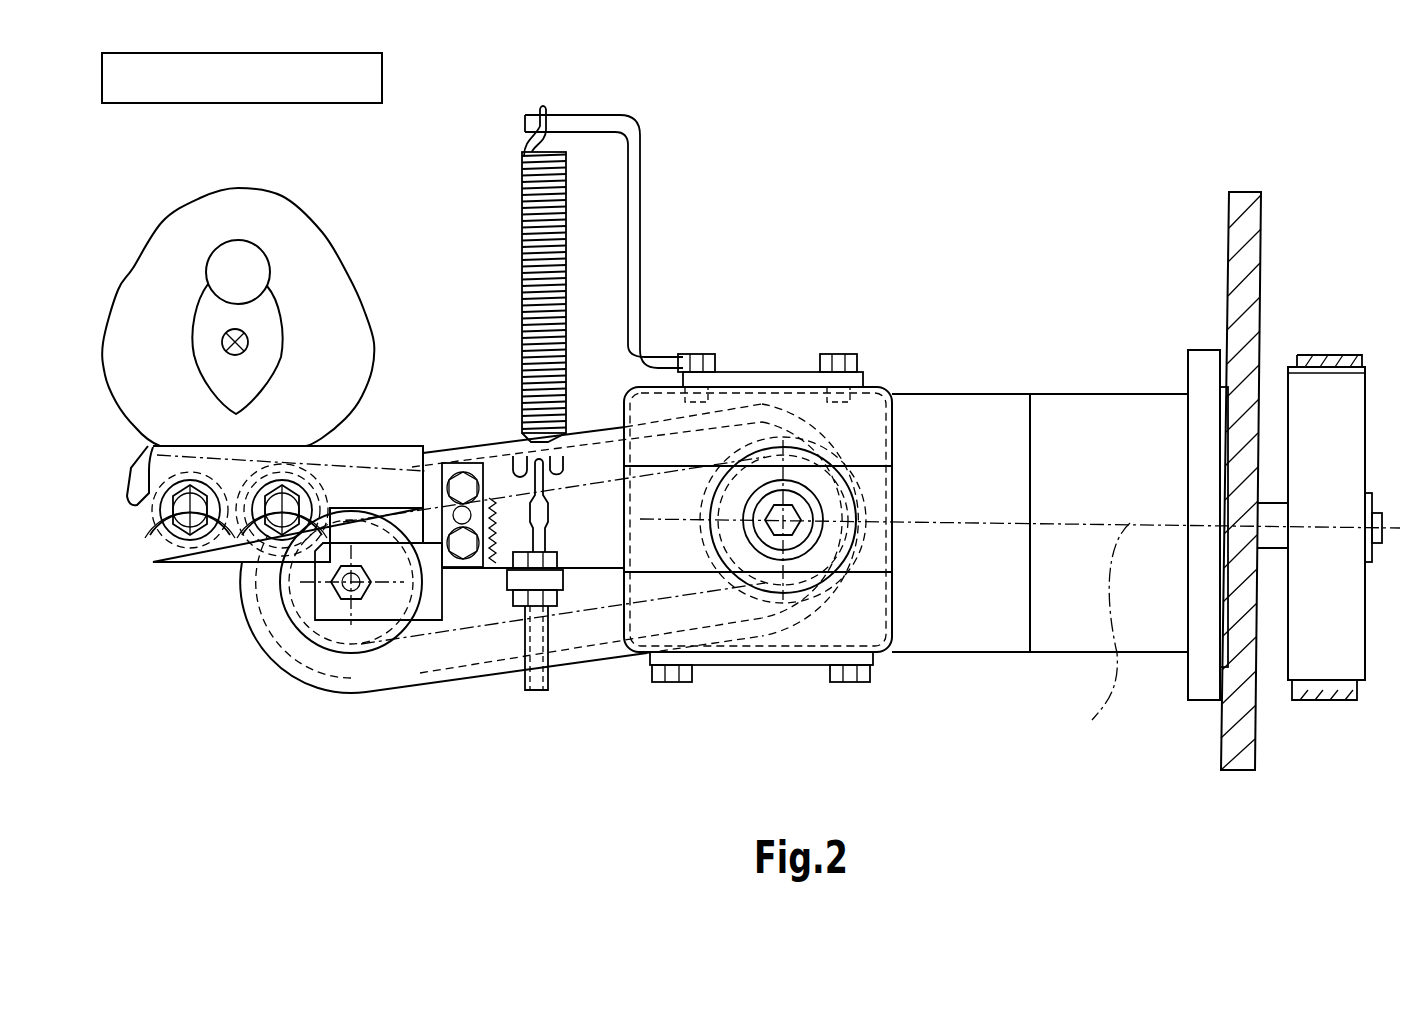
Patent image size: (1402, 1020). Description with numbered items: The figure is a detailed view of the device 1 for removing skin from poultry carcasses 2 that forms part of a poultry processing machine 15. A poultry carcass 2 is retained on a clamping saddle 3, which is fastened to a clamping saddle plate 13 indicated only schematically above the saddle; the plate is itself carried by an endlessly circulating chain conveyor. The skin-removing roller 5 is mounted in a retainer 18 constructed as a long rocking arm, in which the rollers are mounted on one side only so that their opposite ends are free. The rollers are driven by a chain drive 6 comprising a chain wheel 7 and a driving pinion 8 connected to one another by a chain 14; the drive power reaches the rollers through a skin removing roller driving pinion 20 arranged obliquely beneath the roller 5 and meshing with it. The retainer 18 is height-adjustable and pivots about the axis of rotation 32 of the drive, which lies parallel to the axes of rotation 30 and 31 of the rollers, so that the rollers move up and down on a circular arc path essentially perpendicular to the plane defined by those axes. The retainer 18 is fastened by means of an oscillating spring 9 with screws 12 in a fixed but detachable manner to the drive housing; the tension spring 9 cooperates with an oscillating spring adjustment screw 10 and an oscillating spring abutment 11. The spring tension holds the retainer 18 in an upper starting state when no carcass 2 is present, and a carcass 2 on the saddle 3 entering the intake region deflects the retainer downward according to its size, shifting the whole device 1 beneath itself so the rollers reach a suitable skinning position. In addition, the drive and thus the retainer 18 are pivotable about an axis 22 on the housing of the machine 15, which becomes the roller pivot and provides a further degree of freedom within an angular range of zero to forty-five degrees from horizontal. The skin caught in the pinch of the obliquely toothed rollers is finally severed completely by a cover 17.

The device for removing skin from poultry carcasses 1 is at (210, 778).
The poultry carcass 2 is at (342, 303).
The clamping saddle 3 is at (248, 341).
The skin-removing roller 5 is at (227, 530).
The chain drive 6 is at (343, 728).
The chain wheel 7 is at (377, 637).
The driving pinion 8 is at (798, 590).
The oscillating spring 9 is at (520, 228).
The oscillating spring adjustment screw 10 is at (532, 692).
The oscillating spring abutment 11 is at (633, 153).
The screws 12 is at (700, 355).
The clamping saddle plate 13 is at (362, 78).
The chain 14 is at (577, 660).
The poultry processing machine 15 is at (1243, 252).
The cover 17 is at (350, 457).
The retainer 18 is at (160, 547).
The skin removing roller driving pinion 20 is at (284, 613).
The axis of rotation 22 is at (1020, 575).
The axis of rotation of roller 30 is at (175, 530).
The axis of rotation of roller 31 is at (273, 527).
The axis of rotation of the drive 32 is at (780, 528).